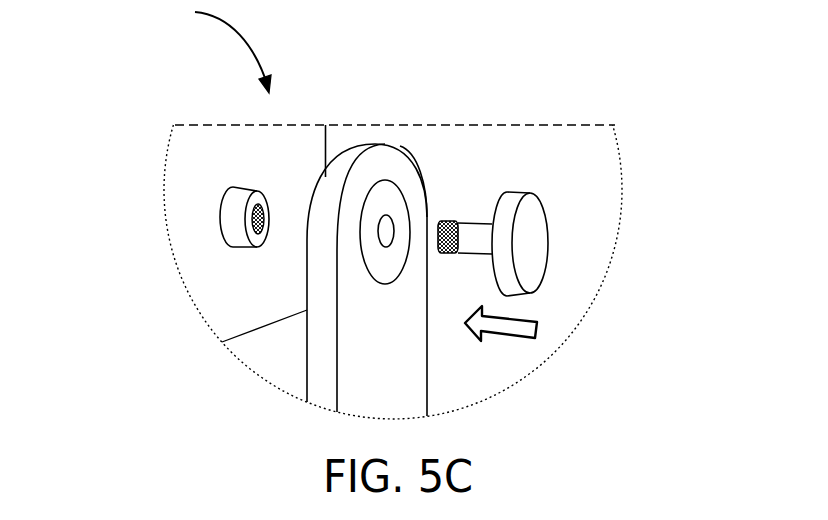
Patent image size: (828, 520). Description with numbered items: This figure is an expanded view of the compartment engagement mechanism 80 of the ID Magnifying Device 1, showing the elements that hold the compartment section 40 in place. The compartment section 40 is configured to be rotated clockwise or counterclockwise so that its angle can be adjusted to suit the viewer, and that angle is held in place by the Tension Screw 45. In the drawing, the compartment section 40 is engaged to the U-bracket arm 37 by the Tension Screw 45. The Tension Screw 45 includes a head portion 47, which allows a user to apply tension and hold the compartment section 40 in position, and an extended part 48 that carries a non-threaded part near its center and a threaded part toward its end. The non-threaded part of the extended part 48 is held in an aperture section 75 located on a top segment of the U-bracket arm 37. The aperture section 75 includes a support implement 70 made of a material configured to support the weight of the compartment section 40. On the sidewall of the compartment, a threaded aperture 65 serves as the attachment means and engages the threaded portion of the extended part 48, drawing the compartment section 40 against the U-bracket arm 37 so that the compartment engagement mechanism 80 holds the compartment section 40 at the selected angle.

The ID Magnifying Device 1 is at (225, 46).
The U-bracket arm 37 is at (382, 158).
The compartment section 40 is at (312, 142).
The Tension Screw 45 is at (548, 245).
The head portion 47 is at (548, 218).
The extended part 48 is at (467, 218).
The threaded aperture 65 is at (228, 224).
The support implement 70 is at (386, 215).
The aperture section 75 is at (418, 163).
The compartment engagement mechanism 80 is at (580, 323).